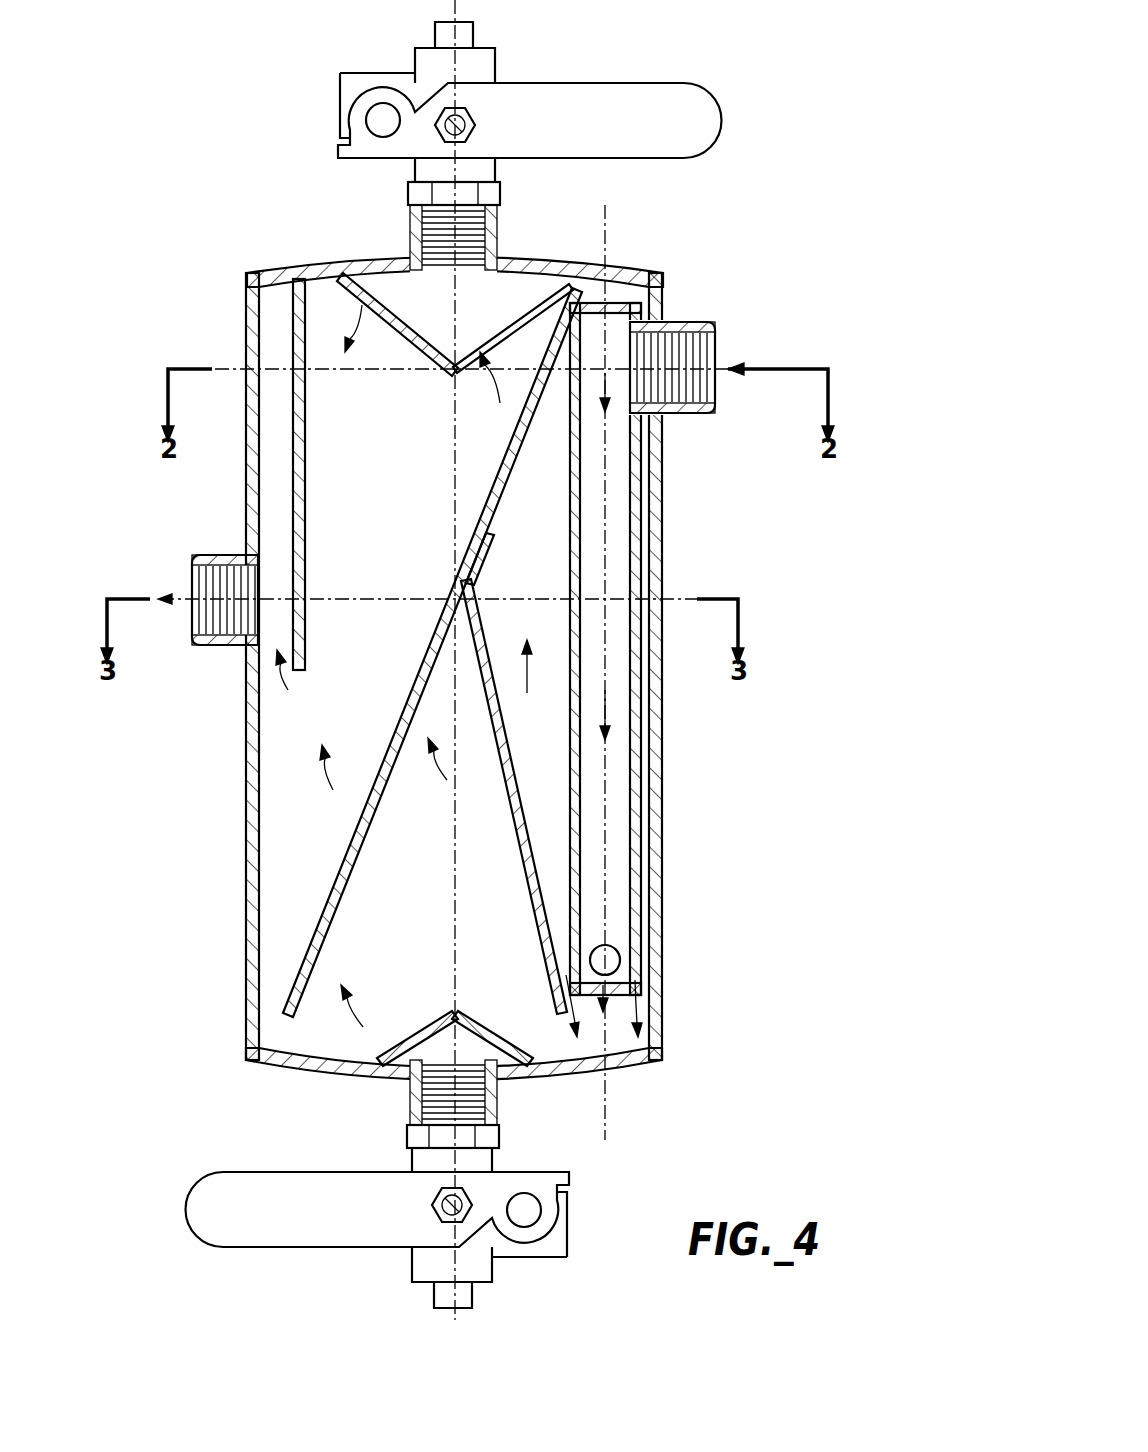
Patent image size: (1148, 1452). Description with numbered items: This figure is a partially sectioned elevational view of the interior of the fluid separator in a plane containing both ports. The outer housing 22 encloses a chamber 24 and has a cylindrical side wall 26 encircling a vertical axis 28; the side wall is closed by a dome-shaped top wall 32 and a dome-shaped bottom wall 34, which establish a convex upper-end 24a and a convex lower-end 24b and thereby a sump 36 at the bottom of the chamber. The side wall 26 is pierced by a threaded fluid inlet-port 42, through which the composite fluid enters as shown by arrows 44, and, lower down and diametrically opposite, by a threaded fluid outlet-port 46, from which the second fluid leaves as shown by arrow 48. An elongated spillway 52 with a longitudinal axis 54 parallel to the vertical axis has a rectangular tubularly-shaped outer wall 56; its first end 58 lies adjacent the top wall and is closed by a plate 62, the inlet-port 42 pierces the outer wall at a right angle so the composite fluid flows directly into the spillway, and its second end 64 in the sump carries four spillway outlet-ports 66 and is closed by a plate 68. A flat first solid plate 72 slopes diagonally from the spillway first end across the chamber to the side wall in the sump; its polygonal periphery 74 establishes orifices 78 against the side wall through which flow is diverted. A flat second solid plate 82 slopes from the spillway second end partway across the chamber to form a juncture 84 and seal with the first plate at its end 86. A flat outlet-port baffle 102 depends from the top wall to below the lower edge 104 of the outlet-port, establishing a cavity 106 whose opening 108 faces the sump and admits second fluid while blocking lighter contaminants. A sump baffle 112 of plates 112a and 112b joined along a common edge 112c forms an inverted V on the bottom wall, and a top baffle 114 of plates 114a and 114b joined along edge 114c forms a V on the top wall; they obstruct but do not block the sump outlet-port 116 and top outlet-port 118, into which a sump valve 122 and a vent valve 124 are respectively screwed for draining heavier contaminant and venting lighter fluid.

The outer housing 22 is at (452, 659).
The chamber 24 is at (372, 560).
The convex upper-end 24a is at (320, 335).
The convex lower-end 24b is at (395, 1065).
The side wall 26 is at (246, 805).
The vertical axis 28 is at (458, 10).
The top wall 32 is at (515, 262).
The bottom wall 34 is at (515, 1081).
The sump 36 is at (410, 1020).
The fluid inlet-port 42 is at (682, 322).
The flow of composite fluid 44 is at (745, 372).
The fluid outlet-port 46 is at (240, 555).
The flow of second fluid 48 is at (178, 596).
The spillway 52 is at (631, 630).
The longitudinal axis 54 is at (607, 215).
The tubularly-shaped outer wall 56 is at (572, 726).
The first end 58 is at (651, 275).
The plate 62 is at (620, 300).
The second end 64 is at (660, 1003).
The spillway outlet-ports 66 is at (655, 950).
The plate 68 is at (640, 990).
The first solid plate 72 is at (417, 635).
The periphery 74 is at (585, 285).
The orifices 78 is at (272, 987).
The second solid plate 82 is at (514, 763).
The juncture 84 is at (478, 582).
The end 86 is at (486, 530).
The outlet-port baffle 102 is at (347, 480).
The lower edge 104 is at (192, 635).
The cavity 106 is at (290, 442).
The opening 108 is at (303, 664).
The sump baffle 112 is at (465, 1002).
The flat plate 112a is at (452, 1008).
The flat plate 112b is at (490, 1036).
The common edge 112c is at (458, 1015).
The top baffle 114 is at (455, 358).
The flat plate 114a is at (447, 369).
The flat plate 114b is at (466, 380).
The common edge 114c is at (456, 378).
The sump outlet-port 116 is at (410, 1110).
The top outlet-port 118 is at (412, 235).
The sump valve 122 is at (497, 1160).
The vent valve 124 is at (497, 65).